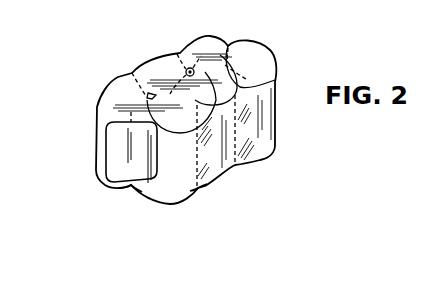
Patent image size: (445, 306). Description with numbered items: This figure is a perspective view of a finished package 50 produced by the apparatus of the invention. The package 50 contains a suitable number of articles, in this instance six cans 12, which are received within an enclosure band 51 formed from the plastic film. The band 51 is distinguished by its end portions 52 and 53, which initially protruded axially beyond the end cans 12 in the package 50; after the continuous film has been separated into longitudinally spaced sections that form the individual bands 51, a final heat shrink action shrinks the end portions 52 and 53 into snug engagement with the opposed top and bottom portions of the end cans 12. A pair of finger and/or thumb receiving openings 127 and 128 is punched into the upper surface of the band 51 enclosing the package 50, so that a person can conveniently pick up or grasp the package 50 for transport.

The package 50 is at (186, 115).
The enclosure band 51 is at (215, 203).
The end portion of the band 52 is at (107, 150).
The end portion of the band 53 is at (115, 203).
The can 12 is at (106, 155).
The finger receiving opening 127 is at (106, 78).
The finger receiving opening 128 is at (173, 41).